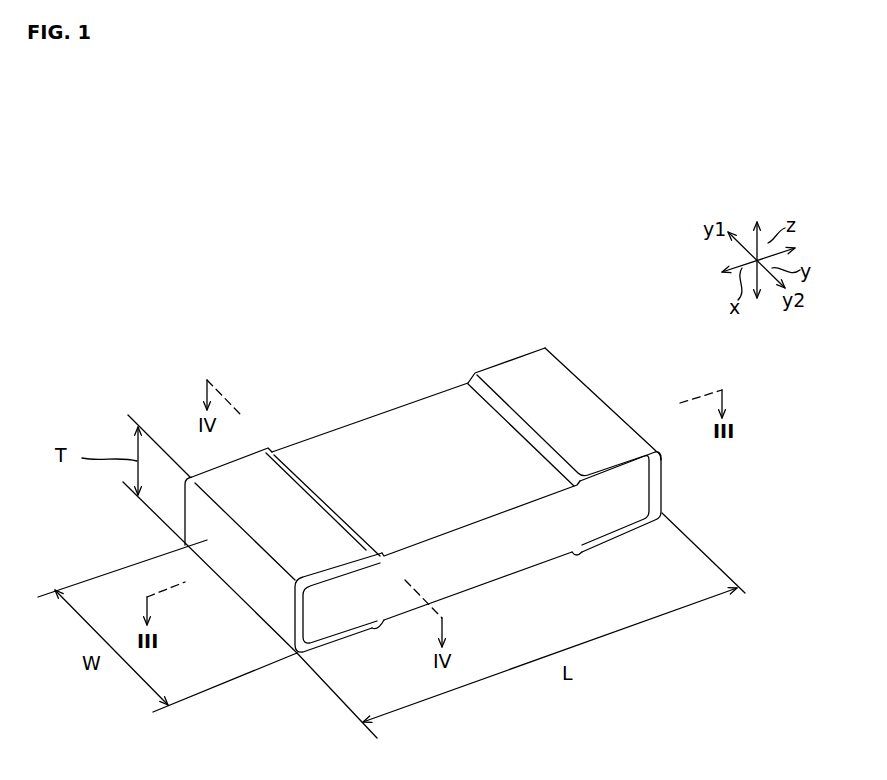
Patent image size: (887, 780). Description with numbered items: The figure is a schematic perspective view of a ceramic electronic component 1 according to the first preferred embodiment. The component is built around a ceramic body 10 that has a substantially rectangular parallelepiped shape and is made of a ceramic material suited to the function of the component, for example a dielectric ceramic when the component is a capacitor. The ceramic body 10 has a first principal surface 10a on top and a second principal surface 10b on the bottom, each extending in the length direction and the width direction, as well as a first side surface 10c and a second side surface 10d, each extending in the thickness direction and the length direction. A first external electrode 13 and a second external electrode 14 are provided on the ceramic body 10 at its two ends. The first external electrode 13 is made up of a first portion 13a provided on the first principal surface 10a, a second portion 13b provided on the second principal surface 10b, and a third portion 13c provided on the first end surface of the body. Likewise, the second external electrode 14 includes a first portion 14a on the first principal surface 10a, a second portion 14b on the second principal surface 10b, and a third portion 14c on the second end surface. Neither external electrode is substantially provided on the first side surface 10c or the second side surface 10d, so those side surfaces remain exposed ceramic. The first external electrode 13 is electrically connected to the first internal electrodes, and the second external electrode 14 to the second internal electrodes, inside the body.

The ceramic electronic component 1 is at (595, 333).
The ceramic body 10 is at (487, 582).
The first principal surface 10a is at (452, 437).
The second principal surface 10b is at (410, 612).
The first side surface 10c is at (552, 530).
The second side surface 10d is at (365, 418).
The first external electrode 13 is at (253, 615).
The first portion of the first external electrode 13a is at (217, 472).
The second portion of the first external electrode 13b is at (358, 640).
The third portion of the first external electrode 13c is at (207, 545).
The second external electrode 14 is at (663, 497).
The first portion of the second external electrode 14a is at (593, 420).
The second portion of the second external electrode 14b is at (620, 542).
The third portion of the second external electrode 14c is at (663, 478).